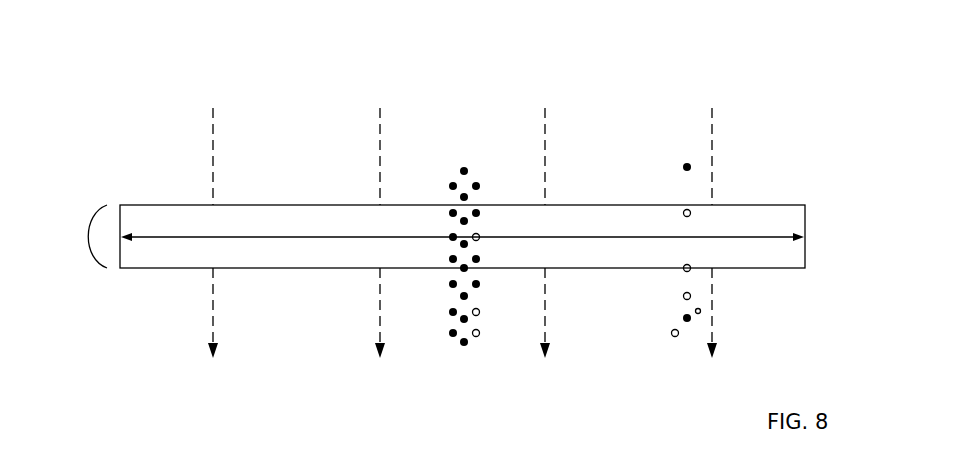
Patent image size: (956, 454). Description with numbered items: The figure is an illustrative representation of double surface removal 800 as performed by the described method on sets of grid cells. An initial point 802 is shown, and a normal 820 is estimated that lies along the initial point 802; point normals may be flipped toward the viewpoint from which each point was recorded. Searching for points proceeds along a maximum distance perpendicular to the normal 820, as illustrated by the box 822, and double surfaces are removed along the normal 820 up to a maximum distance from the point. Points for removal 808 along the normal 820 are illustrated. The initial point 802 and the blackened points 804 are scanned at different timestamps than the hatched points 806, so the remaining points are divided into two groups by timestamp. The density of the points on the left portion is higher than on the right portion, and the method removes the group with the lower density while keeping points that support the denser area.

The double surface removal 800 is at (691, 64).
The initial point 802 is at (451, 236).
The blackened points 804 is at (451, 314).
The hatched points 806 is at (478, 240).
The points for removal 808 is at (684, 266).
The normal 820 is at (170, 228).
The box 822 is at (77, 236).